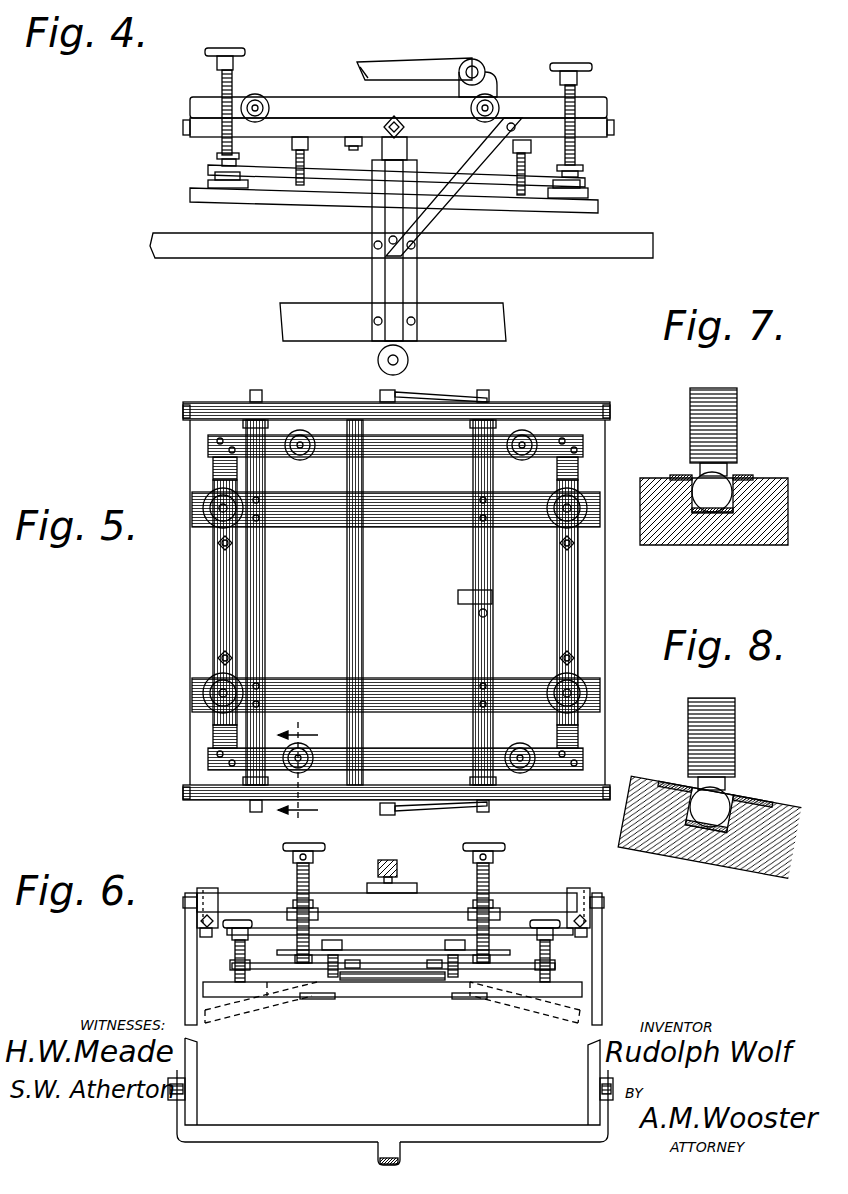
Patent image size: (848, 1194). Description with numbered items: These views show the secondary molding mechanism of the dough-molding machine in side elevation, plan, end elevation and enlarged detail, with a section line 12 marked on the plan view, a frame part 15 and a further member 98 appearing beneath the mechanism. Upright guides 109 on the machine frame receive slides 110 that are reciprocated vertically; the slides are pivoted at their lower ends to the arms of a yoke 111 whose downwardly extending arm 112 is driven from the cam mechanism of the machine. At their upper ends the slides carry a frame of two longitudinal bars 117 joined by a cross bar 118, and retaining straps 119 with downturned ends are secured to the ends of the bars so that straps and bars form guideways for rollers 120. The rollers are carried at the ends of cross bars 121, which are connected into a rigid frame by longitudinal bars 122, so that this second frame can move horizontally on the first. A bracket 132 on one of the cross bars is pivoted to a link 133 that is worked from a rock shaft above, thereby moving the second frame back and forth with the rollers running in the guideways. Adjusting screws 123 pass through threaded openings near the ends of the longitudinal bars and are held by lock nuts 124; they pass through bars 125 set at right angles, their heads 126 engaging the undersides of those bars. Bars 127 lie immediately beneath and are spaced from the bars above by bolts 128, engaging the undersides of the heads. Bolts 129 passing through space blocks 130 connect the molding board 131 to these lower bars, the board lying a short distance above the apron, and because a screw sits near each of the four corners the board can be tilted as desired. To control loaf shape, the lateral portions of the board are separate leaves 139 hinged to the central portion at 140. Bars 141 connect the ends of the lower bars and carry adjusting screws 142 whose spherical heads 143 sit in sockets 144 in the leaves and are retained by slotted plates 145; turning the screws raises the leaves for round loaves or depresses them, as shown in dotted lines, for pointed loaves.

In FIG. 5, the section line 12 is at (298, 774).
In FIG. 4, the base plate 15 is at (490, 322).
In FIG. 4, the support plate 98 is at (620, 233).
In FIG. 4, the upright guides 109 is at (410, 285).
In FIG. 4, the slides 110 is at (394, 275).
In FIG. 5, the slides 110 is at (380, 396).
In FIG. 6, the slides 110 is at (203, 990).
In FIG. 6, the yoke 111 is at (177, 1112).
In FIG. 6, the downwardly extending arm 112 is at (378, 1155).
In FIG. 4, the longitudinal bars 117 is at (308, 128).
In FIG. 4, the cross bar 118 is at (350, 147).
In FIG. 5, the cross bar 118 is at (347, 610).
In FIG. 6, the cross bar 118 is at (368, 933).
In FIG. 4, the retaining straps 119 is at (538, 97).
In FIG. 5, the retaining straps 119 is at (300, 402).
In FIG. 6, the retaining straps 119 is at (205, 893).
In FIG. 4, the rollers 120 is at (268, 98).
In FIG. 5, the rollers 120 is at (250, 397).
In FIG. 6, the rollers 120 is at (197, 896).
In FIG. 5, the cross bars 121 is at (258, 587).
In FIG. 6, the cross bars 121 is at (250, 898).
In FIG. 5, the longitudinal bars 122 is at (385, 518).
In FIG. 6, the longitudinal bars 122 is at (315, 912).
In FIG. 4, the adjusting screws 123 is at (220, 78).
In FIG. 5, the adjusting screws 123 is at (210, 520).
In FIG. 6, the adjusting screws 123 is at (297, 873).
In FIG. 6, the lock nuts 124 is at (318, 905).
In FIG. 4, the bars 125 is at (217, 158).
In FIG. 5, the bars 125 is at (213, 612).
In FIG. 6, the bars 125 is at (370, 957).
In FIG. 6, the heads 126 is at (325, 952).
In FIG. 4, the bars 127 is at (228, 190).
In FIG. 5, the bars 127 is at (213, 469).
In FIG. 6, the bars 127 is at (300, 997).
In FIG. 5, the bolts 128 is at (218, 548).
In FIG. 6, the bolts 128 is at (333, 978).
In FIG. 6, the bolts 129 is at (352, 970).
In FIG. 4, the space blocks 130 is at (210, 183).
In FIG. 6, the space blocks 130 is at (400, 982).
In FIG. 4, the molding board 131 is at (190, 198).
In FIG. 5, the molding board 131 is at (190, 748).
In FIG. 4, the bracket 132 is at (486, 78).
In FIG. 5, the bracket 132 is at (458, 600).
In FIG. 6, the bracket 132 is at (398, 880).
In FIG. 4, the link 133 is at (405, 74).
In FIG. 6, the link 133 is at (385, 858).
In FIG. 6, the leaves 139 is at (226, 1010).
In FIG. 7, the leaves 139 is at (752, 535).
In FIG. 8, the leaves 139 is at (735, 852).
In FIG. 6, the hinge 140 is at (305, 970).
In FIG. 4, the bars 141 is at (268, 170).
In FIG. 5, the bars 141 is at (410, 448).
In FIG. 6, the bars 141 is at (232, 966).
In FIG. 4, the adjusting screws 142 is at (303, 183).
In FIG. 5, the adjusting screws 142 is at (302, 452).
In FIG. 6, the adjusting screws 142 is at (252, 922).
In FIG. 7, the adjusting screws 142 is at (692, 408).
In FIG. 8, the adjusting screws 142 is at (737, 715).
In FIG. 7, the spherical heads 143 is at (718, 490).
In FIG. 8, the spherical heads 143 is at (716, 805).
In FIG. 7, the sockets 144 is at (700, 513).
In FIG. 8, the sockets 144 is at (692, 828).
In FIG. 7, the slotted plates 145 is at (680, 476).
In FIG. 8, the slotted plates 145 is at (668, 782).